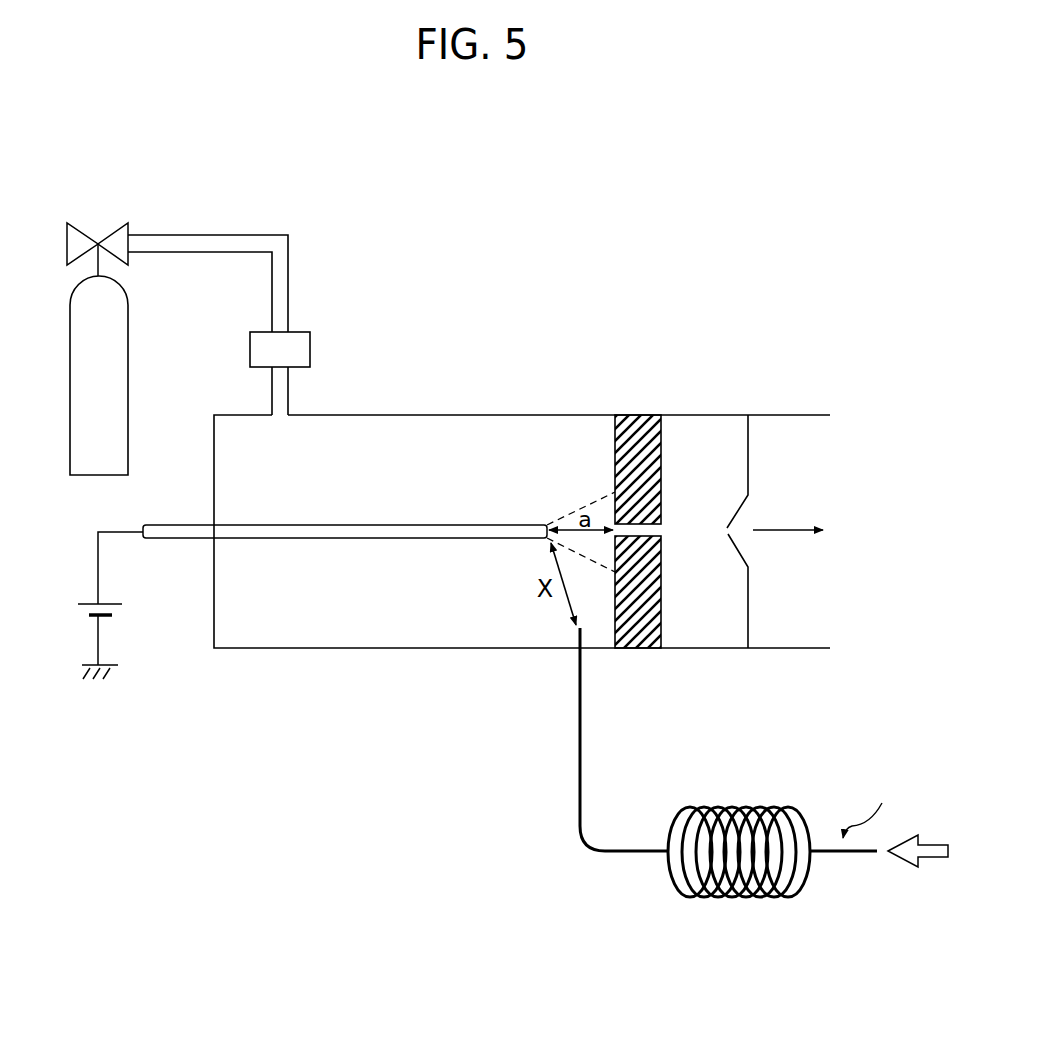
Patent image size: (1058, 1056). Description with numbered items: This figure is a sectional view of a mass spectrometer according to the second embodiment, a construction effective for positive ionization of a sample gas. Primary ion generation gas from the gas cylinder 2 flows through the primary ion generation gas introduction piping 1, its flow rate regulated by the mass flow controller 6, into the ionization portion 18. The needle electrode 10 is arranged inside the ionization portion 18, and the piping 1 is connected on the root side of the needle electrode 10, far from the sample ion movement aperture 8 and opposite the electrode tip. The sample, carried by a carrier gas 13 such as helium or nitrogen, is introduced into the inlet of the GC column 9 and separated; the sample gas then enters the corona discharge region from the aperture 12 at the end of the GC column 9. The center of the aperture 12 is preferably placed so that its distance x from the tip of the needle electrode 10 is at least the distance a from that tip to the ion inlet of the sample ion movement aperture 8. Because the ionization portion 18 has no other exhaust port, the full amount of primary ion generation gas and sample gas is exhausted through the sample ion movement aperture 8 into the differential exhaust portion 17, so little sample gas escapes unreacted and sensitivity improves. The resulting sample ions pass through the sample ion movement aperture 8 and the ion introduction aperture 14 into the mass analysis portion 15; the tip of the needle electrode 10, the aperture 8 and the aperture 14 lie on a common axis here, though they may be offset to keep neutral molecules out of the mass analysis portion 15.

The primary ion generation gas introduction piping 1 is at (278, 384).
The gas cylinder 2 is at (113, 360).
The mass flow controller 6 is at (303, 350).
The sample ion movement aperture 8 is at (637, 472).
The GC column 9 is at (735, 900).
The needle electrode 10 is at (300, 538).
The aperture at the end of the GC column 12 is at (570, 624).
The carrier gas 13 is at (928, 865).
The ion introduction aperture 14 is at (725, 532).
The mass analysis portion 15 is at (803, 445).
The differential exhaust portion 17 is at (713, 447).
The ionization portion 18 is at (563, 473).